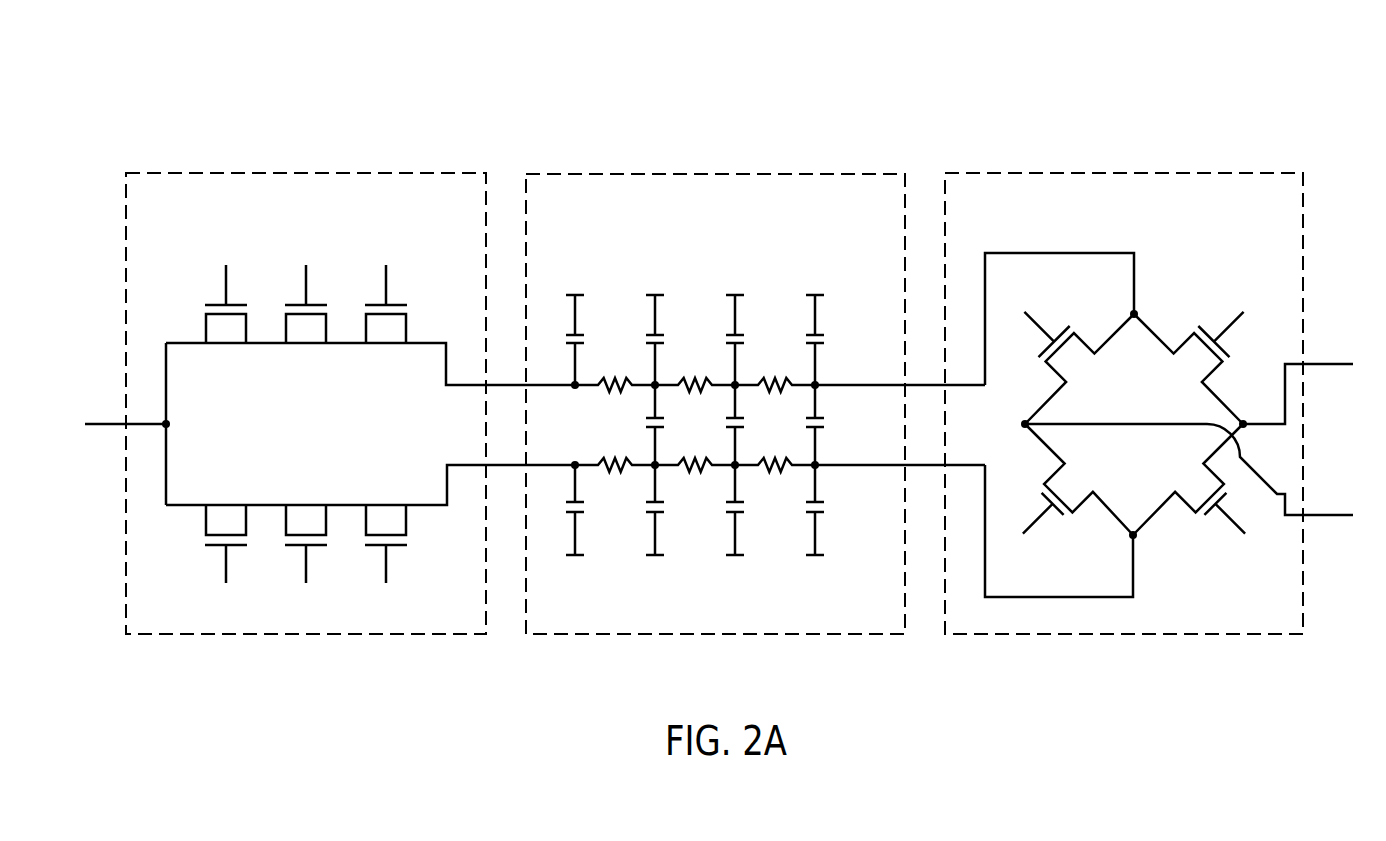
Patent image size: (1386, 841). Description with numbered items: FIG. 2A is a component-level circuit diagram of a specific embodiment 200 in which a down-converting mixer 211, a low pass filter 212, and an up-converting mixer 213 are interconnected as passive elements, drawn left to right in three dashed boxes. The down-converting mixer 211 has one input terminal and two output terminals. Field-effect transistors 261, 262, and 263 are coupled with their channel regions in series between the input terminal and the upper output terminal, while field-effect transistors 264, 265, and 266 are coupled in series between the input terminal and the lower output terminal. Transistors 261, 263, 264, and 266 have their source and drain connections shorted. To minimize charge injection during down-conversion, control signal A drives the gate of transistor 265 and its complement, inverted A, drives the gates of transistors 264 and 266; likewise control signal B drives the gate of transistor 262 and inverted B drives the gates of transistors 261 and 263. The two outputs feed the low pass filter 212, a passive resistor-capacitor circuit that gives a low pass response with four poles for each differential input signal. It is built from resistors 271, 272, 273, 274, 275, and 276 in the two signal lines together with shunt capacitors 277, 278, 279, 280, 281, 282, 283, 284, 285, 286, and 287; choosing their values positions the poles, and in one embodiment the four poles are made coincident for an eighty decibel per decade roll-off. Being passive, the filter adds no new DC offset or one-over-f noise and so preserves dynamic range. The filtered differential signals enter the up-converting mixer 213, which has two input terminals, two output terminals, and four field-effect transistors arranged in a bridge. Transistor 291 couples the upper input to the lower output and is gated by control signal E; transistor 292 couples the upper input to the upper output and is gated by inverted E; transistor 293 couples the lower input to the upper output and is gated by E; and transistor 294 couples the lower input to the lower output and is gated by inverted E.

The specific embodiment 200 is at (847, 52).
The down-converting mixer 211 is at (460, 217).
The low pass filter 212 is at (833, 218).
The up-converting mixer 213 is at (1265, 217).
The field-effect transistor 261 is at (228, 335).
The field-effect transistor 262 is at (306, 342).
The field-effect transistor 263 is at (387, 335).
The field-effect transistor 264 is at (227, 515).
The field-effect transistor 265 is at (306, 507).
The field-effect transistor 266 is at (386, 515).
The resistor 271 is at (631, 377).
The resistor 272 is at (631, 457).
The resistor 273 is at (711, 377).
The resistor 274 is at (711, 457).
The resistor 275 is at (791, 377).
The resistor 276 is at (791, 457).
The capacitor 277 is at (670, 337).
The capacitor 278 is at (670, 420).
The capacitor 279 is at (670, 510).
The capacitor 280 is at (750, 337).
The capacitor 281 is at (750, 420).
The capacitor 282 is at (750, 510).
The capacitor 283 is at (830, 337).
The capacitor 284 is at (830, 420).
The capacitor 285 is at (830, 510).
The capacitor 286 is at (590, 337).
The capacitor 287 is at (590, 510).
The field-effect transistor 291 is at (1070, 360).
The field-effect transistor 292 is at (1198, 358).
The field-effect transistor 293 is at (1198, 488).
The field-effect transistor 294 is at (1072, 490).